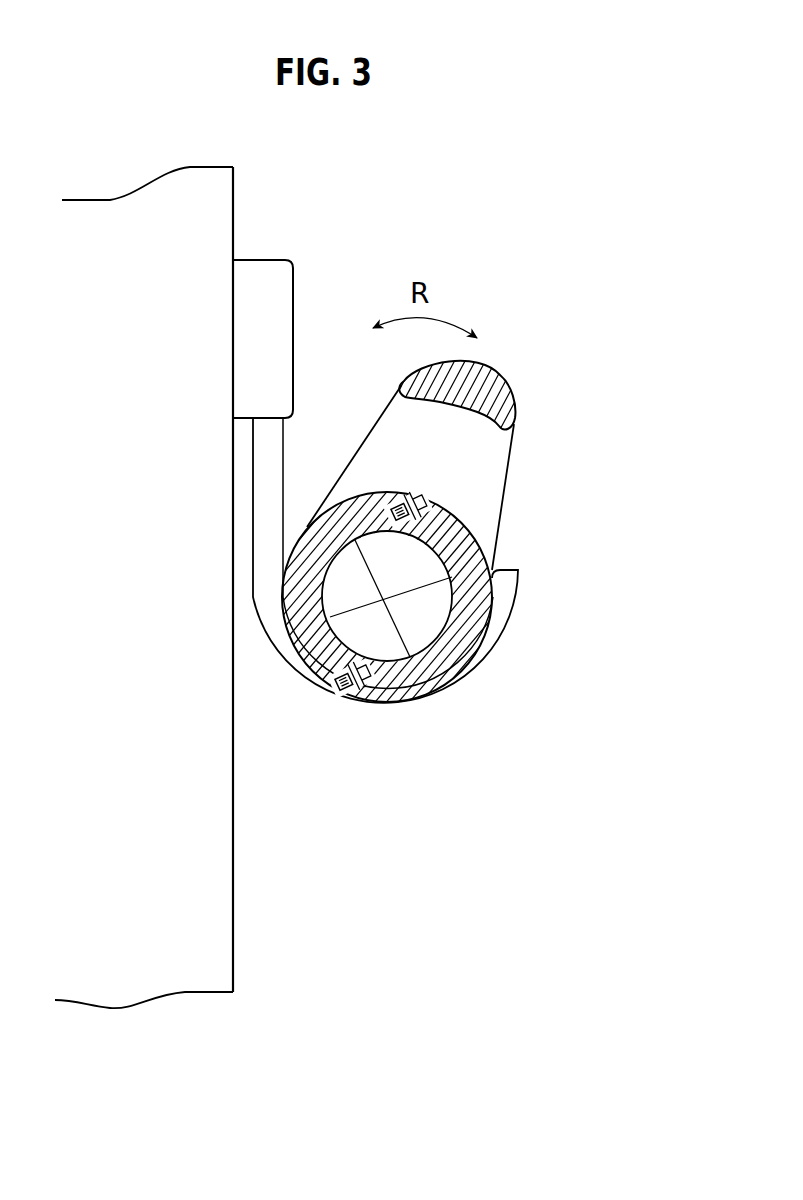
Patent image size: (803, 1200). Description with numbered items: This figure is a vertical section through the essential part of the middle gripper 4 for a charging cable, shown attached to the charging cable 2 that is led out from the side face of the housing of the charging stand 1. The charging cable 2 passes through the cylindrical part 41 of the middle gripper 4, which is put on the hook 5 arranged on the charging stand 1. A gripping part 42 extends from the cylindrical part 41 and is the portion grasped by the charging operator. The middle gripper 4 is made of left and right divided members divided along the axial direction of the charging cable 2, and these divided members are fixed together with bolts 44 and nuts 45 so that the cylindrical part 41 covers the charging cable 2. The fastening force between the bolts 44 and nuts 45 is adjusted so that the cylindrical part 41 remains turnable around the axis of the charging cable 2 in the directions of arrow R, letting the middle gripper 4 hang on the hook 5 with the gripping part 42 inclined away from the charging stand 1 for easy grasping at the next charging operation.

The charging stand 1 is at (255, 962).
The charging cable 2 is at (433, 615).
The middle gripper 4 is at (454, 558).
The hook 5 is at (452, 697).
The cylindrical part 41 is at (482, 592).
The gripping part 42 is at (503, 384).
The bolt 44 is at (448, 512).
The nut 45 is at (398, 494).